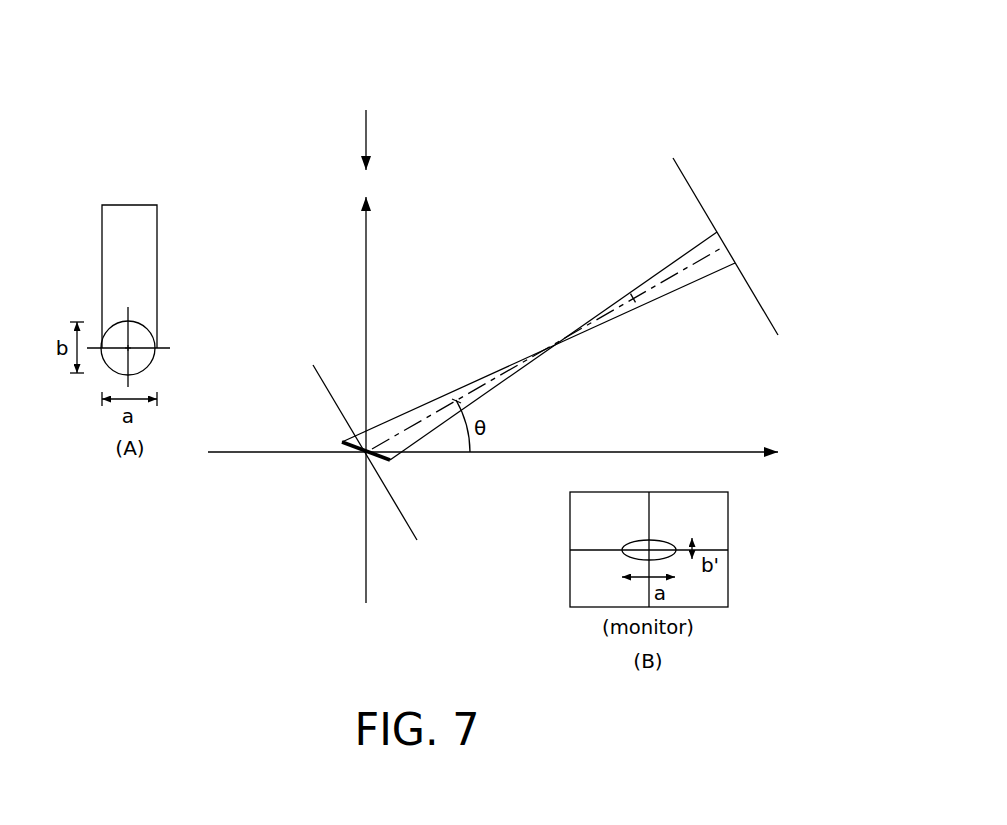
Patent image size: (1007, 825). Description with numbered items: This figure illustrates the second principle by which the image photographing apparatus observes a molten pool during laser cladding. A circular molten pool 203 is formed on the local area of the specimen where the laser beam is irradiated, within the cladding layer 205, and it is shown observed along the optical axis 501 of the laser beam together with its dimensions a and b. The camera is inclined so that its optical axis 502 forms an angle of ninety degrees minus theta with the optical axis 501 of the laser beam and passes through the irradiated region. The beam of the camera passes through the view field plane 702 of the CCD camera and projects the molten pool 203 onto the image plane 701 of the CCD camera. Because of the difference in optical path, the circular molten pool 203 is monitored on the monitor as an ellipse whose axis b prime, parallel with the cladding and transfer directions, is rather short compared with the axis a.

The molten pool 203 is at (118, 325).
The cladding layer 205 is at (129, 236).
The optical axis of the laser beam 501 is at (367, 327).
The optical axis of the image photographing apparatus 502 is at (633, 300).
The image plane of a CCD camera 701 is at (770, 175).
The view field plane of a CCD camera 702 is at (322, 378).